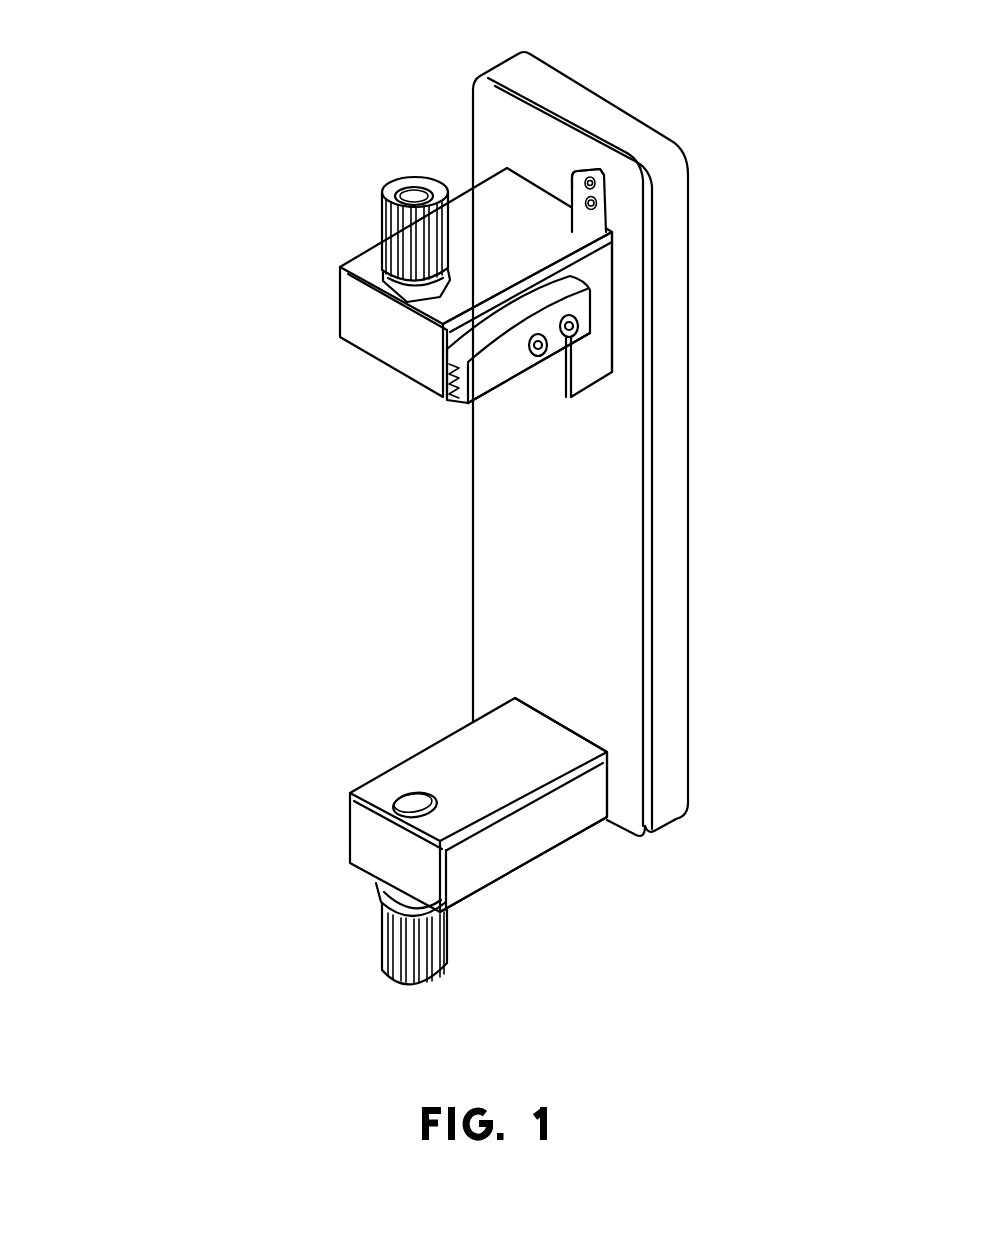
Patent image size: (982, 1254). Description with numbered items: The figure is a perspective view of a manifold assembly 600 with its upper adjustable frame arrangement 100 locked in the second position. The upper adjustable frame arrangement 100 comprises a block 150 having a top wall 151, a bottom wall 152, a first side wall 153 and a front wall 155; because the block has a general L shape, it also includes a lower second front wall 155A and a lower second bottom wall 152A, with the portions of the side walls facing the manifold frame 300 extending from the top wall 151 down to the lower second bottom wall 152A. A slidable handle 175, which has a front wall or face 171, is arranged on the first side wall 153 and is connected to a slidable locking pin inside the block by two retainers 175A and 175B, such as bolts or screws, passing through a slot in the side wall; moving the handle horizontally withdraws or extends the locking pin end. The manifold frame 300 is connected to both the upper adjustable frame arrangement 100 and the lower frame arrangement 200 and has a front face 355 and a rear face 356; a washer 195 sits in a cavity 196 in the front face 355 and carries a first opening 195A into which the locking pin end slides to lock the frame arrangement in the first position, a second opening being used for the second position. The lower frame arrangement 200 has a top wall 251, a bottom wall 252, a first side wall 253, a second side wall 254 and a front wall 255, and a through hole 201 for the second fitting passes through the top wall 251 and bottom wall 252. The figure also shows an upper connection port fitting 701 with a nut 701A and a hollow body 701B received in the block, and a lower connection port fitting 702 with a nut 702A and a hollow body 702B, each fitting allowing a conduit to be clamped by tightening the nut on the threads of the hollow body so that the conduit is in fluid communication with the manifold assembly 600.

The upper adjustable frame arrangement 100 is at (434, 268).
The manifold assembly 600 is at (147, 490).
The upper connection port fitting 701 is at (320, 196).
The nut 701A is at (392, 182).
The hollow body 701B is at (320, 271).
The block 150 is at (520, 208).
The top wall 151 is at (518, 212).
The cavity 196 is at (577, 174).
The washer 195 is at (674, 148).
The first opening 195A is at (604, 210).
The first side wall 153 is at (590, 260).
The retainer 175A is at (578, 323).
The retainer 175B is at (577, 338).
The front wall 155 is at (368, 318).
The bottom wall 152 is at (509, 374).
The front wall or face 171 is at (442, 393).
The slidable handle 175 is at (570, 386).
The lower second front wall 155A is at (548, 376).
The lower second bottom wall 152A is at (583, 387).
The manifold frame 300 is at (583, 444).
The rear face 356 is at (690, 585).
The front face 355 is at (507, 575).
The second side wall 254 is at (452, 737).
The through hole 201 is at (408, 805).
The front wall 255 is at (358, 824).
The lower frame arrangement 200 is at (414, 855).
The hollow body 702B is at (376, 892).
The lower connection port fitting 702 is at (399, 962).
The nut 702A is at (430, 971).
The top wall 251 is at (520, 770).
The first side wall 253 is at (507, 847).
The bottom wall 252 is at (483, 890).